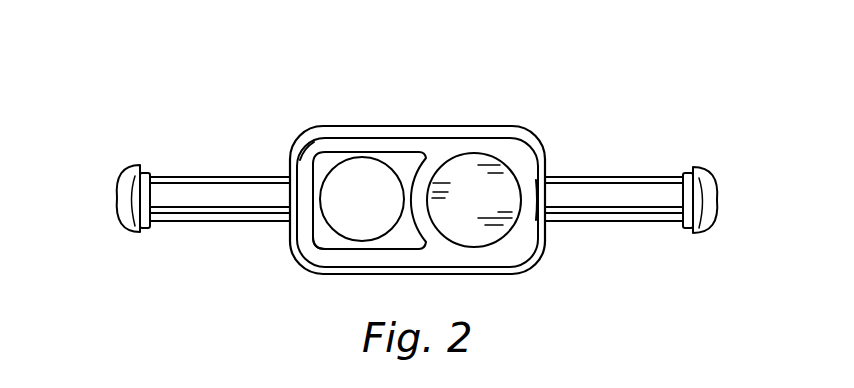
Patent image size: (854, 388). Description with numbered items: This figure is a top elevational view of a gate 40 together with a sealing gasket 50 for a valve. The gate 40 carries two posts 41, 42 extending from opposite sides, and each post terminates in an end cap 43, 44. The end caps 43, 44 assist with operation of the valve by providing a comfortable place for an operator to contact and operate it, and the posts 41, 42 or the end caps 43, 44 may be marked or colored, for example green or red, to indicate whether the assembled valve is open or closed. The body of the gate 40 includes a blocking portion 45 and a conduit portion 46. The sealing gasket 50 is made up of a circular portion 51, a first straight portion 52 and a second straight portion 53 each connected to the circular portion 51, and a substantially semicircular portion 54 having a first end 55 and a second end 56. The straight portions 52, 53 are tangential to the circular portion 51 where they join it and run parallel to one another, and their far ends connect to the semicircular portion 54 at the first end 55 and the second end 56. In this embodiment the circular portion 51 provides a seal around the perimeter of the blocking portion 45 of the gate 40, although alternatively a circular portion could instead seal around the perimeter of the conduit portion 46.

The gate 40 is at (336, 139).
The post 41 is at (203, 200).
The post 42 is at (643, 208).
The end cap 43 is at (125, 232).
The end cap 44 is at (700, 222).
The blocking portion 45 is at (482, 192).
The conduit portion 46 is at (363, 203).
The sealing gasket 50 is at (346, 262).
The circular portion 51 is at (525, 172).
The first straight portion 52 is at (366, 147).
The second straight portion 53 is at (397, 257).
The substantially semicircular portion 54 is at (317, 165).
The first end 55 is at (356, 151).
The second end 56 is at (343, 252).